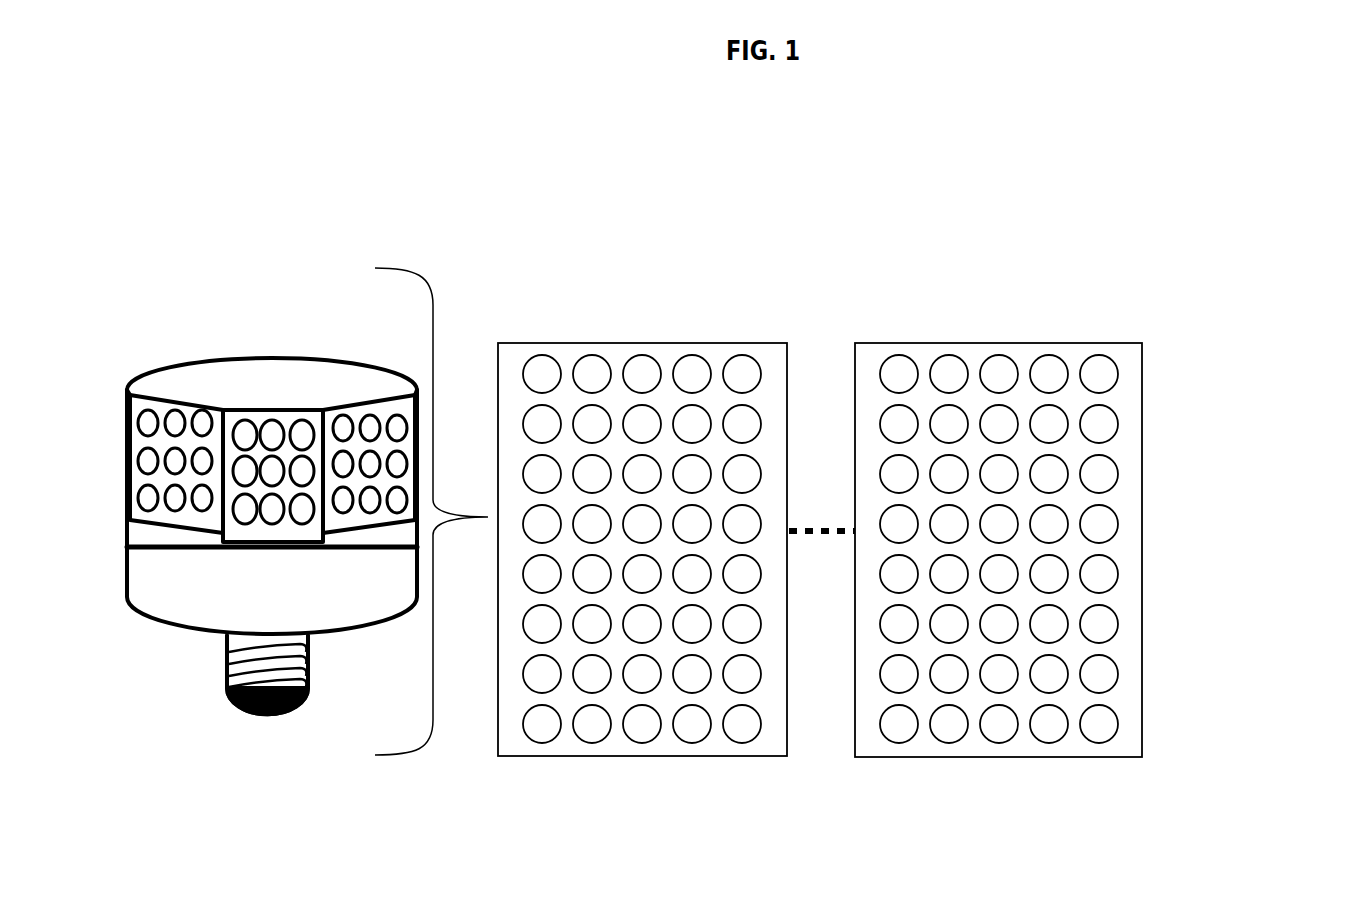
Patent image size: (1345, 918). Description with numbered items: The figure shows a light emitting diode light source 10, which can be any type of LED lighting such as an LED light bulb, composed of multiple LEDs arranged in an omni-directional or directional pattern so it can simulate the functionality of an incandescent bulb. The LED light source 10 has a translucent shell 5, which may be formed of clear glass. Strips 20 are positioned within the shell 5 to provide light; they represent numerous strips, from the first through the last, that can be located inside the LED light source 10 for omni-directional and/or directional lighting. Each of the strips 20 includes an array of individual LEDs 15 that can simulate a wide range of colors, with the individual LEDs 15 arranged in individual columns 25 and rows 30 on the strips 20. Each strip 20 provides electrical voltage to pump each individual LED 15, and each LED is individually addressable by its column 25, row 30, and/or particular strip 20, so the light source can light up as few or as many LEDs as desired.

The shell 5 is at (200, 297).
The LED light source 10 is at (307, 152).
The individual LEDs 15 is at (737, 368).
The strips 20 is at (998, 757).
The individual columns 25 is at (1128, 358).
The rows 30 is at (1133, 745).